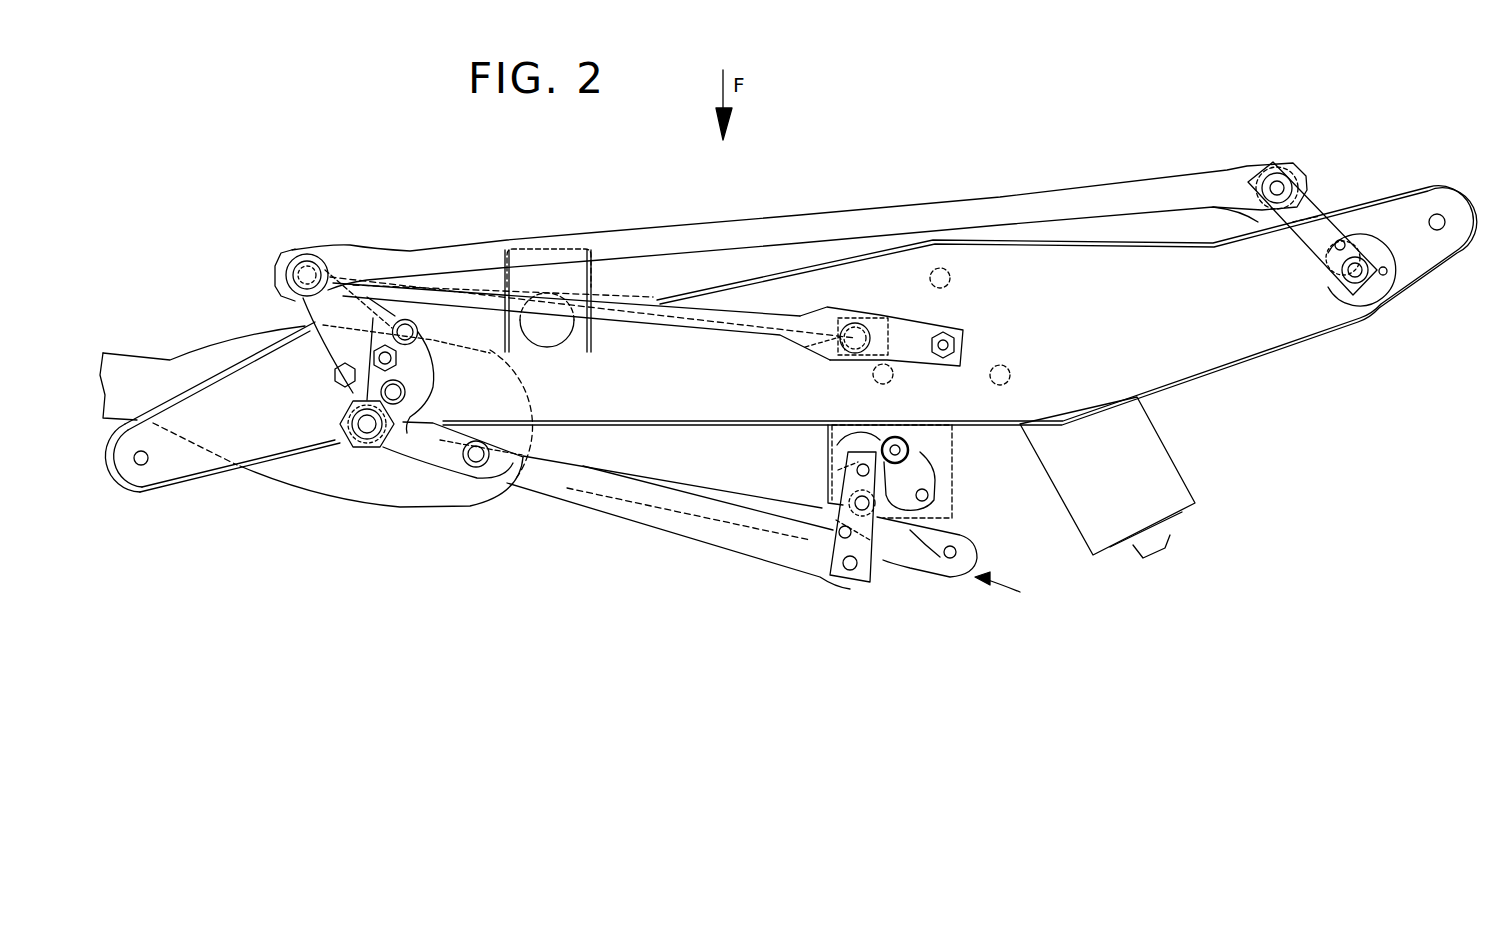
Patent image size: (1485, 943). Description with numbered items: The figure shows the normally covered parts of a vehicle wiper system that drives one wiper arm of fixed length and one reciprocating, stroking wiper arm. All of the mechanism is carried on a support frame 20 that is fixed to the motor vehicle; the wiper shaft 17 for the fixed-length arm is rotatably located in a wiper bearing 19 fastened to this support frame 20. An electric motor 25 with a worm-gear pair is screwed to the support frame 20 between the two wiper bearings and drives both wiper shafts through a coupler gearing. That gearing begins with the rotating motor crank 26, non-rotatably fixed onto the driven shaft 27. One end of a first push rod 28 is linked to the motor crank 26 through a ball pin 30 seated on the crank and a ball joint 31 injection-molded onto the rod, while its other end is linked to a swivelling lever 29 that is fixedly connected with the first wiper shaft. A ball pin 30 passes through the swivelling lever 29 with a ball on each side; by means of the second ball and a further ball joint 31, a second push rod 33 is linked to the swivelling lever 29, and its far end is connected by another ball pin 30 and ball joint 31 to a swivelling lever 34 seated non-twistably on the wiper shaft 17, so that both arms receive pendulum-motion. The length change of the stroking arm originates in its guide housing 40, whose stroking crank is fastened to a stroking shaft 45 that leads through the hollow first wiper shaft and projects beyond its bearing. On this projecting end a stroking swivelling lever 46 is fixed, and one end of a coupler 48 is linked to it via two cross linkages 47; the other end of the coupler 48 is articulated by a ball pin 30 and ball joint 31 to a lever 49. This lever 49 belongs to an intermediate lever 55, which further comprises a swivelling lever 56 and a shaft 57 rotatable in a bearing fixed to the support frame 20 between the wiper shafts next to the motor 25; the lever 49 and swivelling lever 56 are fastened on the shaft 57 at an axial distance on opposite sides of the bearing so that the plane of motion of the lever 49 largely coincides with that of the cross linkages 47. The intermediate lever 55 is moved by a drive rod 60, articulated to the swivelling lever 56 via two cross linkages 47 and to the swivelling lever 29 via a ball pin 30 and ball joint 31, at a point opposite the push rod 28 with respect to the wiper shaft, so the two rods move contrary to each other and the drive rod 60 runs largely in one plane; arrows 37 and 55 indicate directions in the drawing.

The wiper shaft 17 is at (1358, 278).
The wiper bearing 19 is at (1388, 283).
The support frame 20 is at (1252, 337).
The electric motor 25 is at (1170, 487).
The motor crank 26 is at (912, 328).
The driven shaft 27 is at (948, 330).
The first push rod 28 is at (775, 320).
The swivelling lever 29 is at (312, 313).
The ball pin 30 is at (320, 258).
The ball joint 31 is at (292, 252).
The second push rod 33 is at (684, 241).
The swivelling lever 34 is at (1313, 205).
The direction arrow 37 is at (1016, 591).
The guide housing 40 is at (367, 487).
The stroking shaft 45 is at (362, 357).
The stroking swivelling lever 46 is at (352, 410).
The cross linkage 47 is at (433, 401).
The coupler 48 is at (730, 538).
The lever 49 is at (828, 574).
The intermediate lever 55 is at (935, 470).
The swivelling lever 56 is at (867, 443).
The shaft 57 is at (848, 468).
The drive rod 60 is at (773, 506).